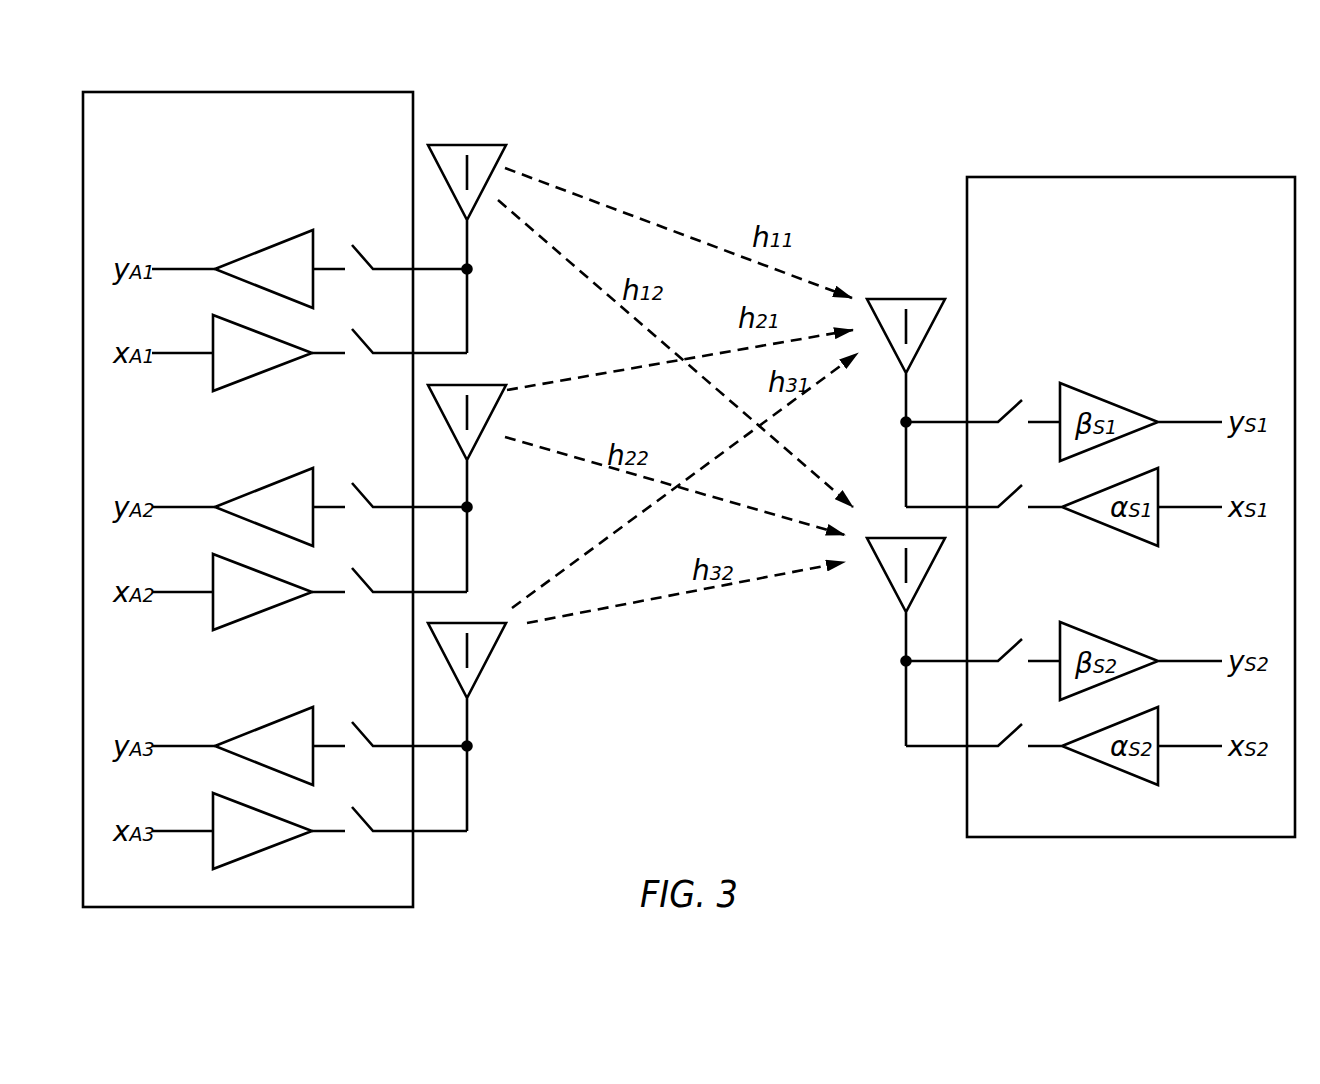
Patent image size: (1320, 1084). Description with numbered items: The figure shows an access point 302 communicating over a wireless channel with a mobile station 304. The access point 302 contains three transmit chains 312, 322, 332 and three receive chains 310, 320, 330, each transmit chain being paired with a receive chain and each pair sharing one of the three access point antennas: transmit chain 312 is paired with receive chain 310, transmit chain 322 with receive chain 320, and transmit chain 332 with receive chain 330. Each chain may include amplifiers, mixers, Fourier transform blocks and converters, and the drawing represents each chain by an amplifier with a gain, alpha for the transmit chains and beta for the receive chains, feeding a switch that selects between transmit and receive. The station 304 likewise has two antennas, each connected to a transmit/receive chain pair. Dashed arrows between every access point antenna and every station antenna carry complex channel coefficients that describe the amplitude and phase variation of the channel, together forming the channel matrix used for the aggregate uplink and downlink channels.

The access point 302 is at (413, 875).
The station 304 is at (967, 795).
The receive chain 310 is at (275, 245).
The transmit chain 312 is at (253, 375).
The receive chain 320 is at (275, 483).
The transmit chain 322 is at (253, 614).
The receive chain 330 is at (275, 722).
The transmit chain 332 is at (253, 853).